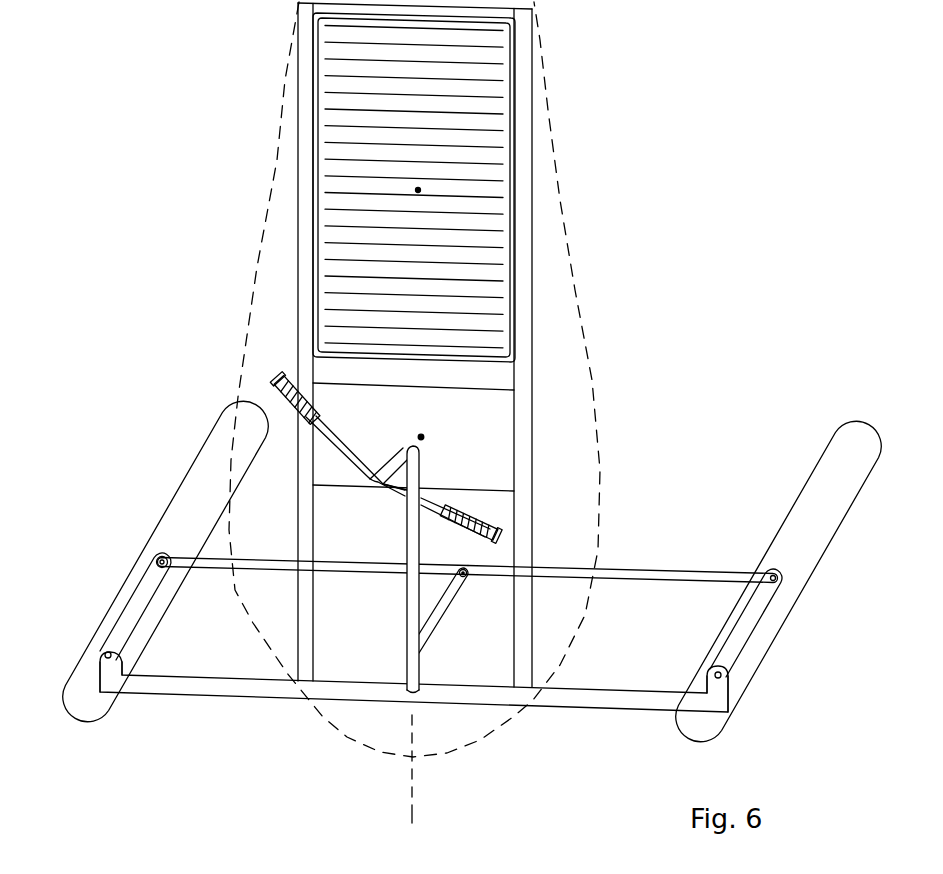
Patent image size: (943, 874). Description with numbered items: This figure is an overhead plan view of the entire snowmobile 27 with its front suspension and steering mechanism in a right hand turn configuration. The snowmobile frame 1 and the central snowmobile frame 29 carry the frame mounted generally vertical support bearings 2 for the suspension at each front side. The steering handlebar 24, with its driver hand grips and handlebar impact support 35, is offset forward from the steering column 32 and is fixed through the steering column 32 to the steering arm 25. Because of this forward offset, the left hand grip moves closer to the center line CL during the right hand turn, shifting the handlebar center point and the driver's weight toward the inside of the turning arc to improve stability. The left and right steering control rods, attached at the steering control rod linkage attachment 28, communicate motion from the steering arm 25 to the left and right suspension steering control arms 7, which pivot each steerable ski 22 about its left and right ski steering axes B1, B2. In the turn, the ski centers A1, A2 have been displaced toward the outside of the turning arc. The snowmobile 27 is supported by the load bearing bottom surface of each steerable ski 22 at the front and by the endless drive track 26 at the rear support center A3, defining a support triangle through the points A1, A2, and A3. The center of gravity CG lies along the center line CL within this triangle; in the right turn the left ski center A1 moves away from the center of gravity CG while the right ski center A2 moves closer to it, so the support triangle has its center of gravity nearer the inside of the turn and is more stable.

The snowmobile frame 1 is at (604, 704).
The frame mounted generally vertical support bearing 2 is at (97, 657).
The suspension steering control arm 7 is at (120, 633).
The steerable ski 22 is at (208, 472).
The steering handlebar 24 is at (443, 510).
The steering arm 25 is at (413, 613).
The endless drive track 26 is at (492, 106).
The snowmobile body 27 is at (557, 196).
The steering control rod linkage attachment 28 is at (471, 563).
The central snowmobile frame 29 is at (527, 393).
The steering column 32 is at (427, 635).
The handlebar impact support 35 is at (393, 459).
The left secondary ski steering axis A1 is at (769, 568).
The right secondary ski steering axis A2 is at (154, 561).
The rear support center of snowmobile A3 is at (410, 188).
The left ski steering axis B1 is at (730, 668).
The right ski steering axis B2 is at (101, 653).
The center of gravity CG is at (432, 431).
The center line of snowmobile CL is at (414, 815).